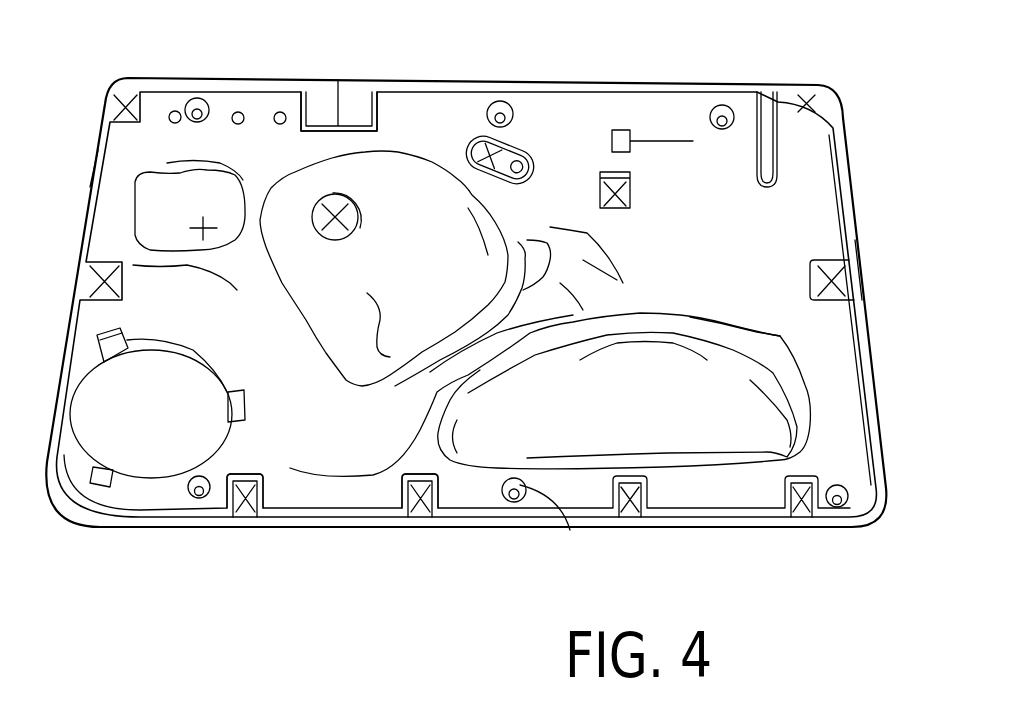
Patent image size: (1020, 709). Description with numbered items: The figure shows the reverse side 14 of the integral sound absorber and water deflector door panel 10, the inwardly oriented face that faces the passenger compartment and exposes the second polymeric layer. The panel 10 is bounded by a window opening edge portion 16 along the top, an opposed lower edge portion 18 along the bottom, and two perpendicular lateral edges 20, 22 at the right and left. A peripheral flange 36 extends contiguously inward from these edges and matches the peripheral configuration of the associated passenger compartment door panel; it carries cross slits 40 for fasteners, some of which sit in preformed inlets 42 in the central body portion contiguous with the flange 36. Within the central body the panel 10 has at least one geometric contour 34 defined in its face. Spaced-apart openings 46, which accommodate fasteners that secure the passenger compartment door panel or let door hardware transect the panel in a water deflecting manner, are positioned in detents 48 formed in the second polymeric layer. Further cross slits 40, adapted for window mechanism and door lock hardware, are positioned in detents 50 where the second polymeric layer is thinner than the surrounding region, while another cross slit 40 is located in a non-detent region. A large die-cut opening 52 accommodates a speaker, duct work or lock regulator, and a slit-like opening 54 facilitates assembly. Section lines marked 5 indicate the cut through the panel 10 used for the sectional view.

The integral door panel 10 is at (687, 18).
The reverse side 14 is at (791, 356).
The window opening edge portion 16 is at (398, 81).
The lower edge portion 18 is at (343, 528).
The lateral edge 20 is at (862, 284).
The lateral edge 22 is at (90, 187).
The geometric contour 34 is at (797, 410).
The flange 36 is at (710, 527).
The cross slit 40 is at (205, 230).
The preformed inlet 42 is at (250, 500).
The spaced-apart opening 46 is at (513, 502).
The detent 48 is at (570, 530).
The detent 50 is at (332, 198).
The opening 52 is at (102, 435).
The opening 54 is at (630, 133).
The section line 5- 5 is at (593, 192).